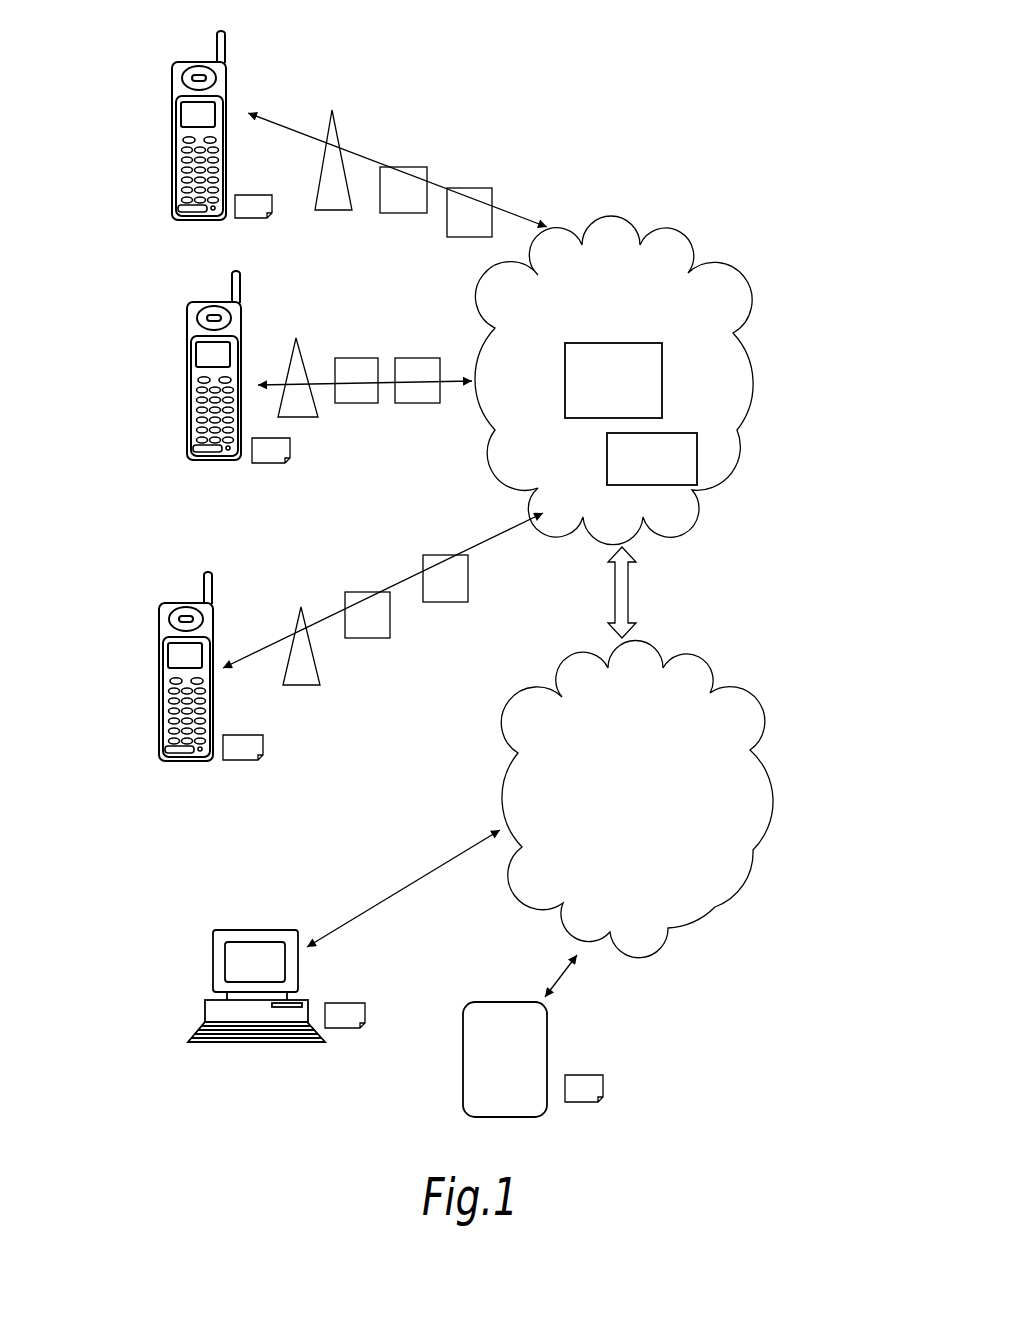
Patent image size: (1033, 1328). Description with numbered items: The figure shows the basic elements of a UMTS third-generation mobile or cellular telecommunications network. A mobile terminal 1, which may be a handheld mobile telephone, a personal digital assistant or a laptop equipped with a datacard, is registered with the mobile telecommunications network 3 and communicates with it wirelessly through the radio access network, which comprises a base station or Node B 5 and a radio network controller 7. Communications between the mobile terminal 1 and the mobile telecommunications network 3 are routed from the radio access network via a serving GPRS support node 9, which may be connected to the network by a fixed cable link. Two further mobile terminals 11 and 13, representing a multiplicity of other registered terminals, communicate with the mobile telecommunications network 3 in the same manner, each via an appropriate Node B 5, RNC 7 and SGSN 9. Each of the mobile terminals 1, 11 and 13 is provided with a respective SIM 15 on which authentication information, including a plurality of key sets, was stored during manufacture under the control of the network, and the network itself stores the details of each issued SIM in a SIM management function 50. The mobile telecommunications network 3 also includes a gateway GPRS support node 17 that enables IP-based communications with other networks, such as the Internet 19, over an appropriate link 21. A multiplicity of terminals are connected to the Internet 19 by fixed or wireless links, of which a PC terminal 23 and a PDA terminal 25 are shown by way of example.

The mobile terminal 1 is at (228, 72).
The mobile telecommunications network 3 is at (612, 228).
The base station (Node B) 5 is at (332, 113).
The radio network controller (RNC) 7 is at (398, 175).
The serving GPRS support node (SGSN) 9 is at (473, 197).
The mobile terminal 11 is at (185, 347).
The mobile terminal 13 is at (158, 677).
The SIM 15 is at (252, 211).
The gateway GPRS support node (GGSN) 17 is at (673, 458).
The Internet 19 is at (750, 703).
The link 21 is at (629, 592).
The PC terminal 23 is at (203, 1010).
The PDA terminal 25 is at (478, 1088).
The SIM management function 50 is at (613, 360).